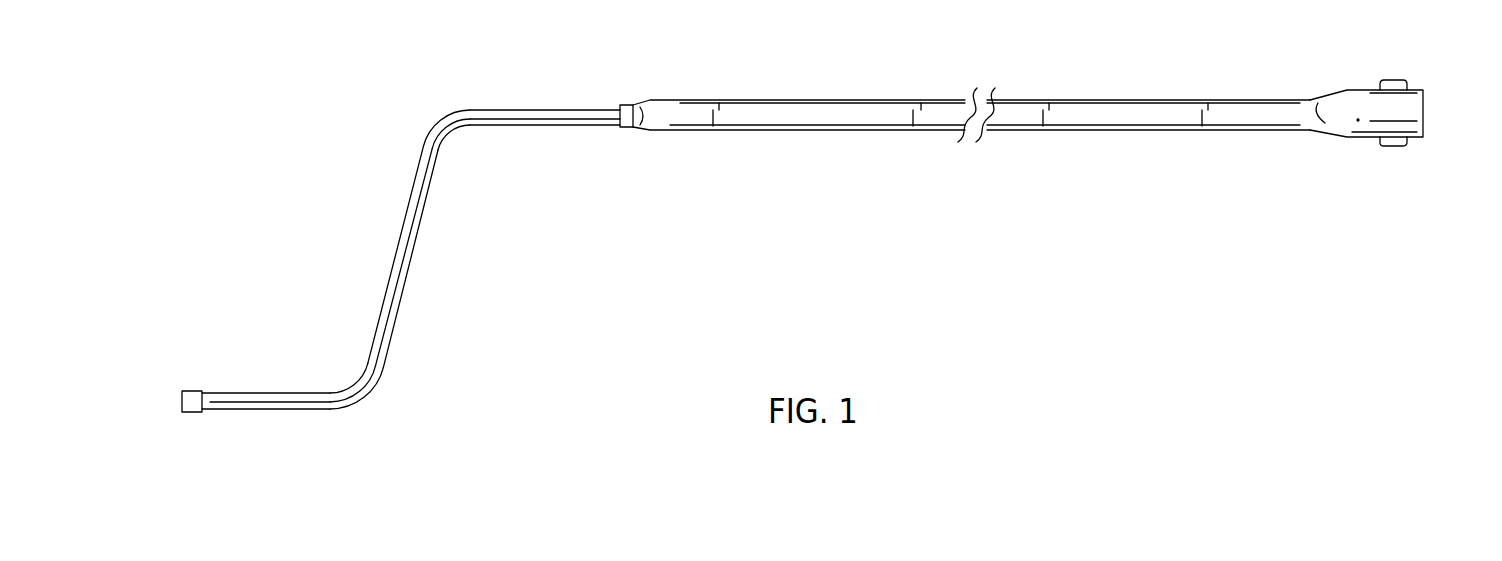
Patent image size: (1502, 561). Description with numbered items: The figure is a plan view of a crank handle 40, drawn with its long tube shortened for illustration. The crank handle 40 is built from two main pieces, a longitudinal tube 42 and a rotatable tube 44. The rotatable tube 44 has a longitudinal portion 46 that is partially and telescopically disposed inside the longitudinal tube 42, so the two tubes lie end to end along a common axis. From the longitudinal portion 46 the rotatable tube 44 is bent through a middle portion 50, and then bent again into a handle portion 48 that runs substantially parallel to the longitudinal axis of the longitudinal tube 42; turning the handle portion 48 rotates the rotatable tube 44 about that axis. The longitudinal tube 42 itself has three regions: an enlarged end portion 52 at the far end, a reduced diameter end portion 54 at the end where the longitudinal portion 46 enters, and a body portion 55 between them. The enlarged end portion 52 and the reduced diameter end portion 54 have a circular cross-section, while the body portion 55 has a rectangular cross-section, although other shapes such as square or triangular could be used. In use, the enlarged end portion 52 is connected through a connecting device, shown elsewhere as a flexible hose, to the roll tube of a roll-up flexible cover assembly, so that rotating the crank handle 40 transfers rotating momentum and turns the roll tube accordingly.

The crank handle 40 is at (1070, 145).
The longitudinal tube 42 is at (792, 100).
The rotatable tube 44 is at (482, 109).
The longitudinal portion 46 is at (558, 112).
The handle portion 48 is at (253, 392).
The middle portion 50 is at (398, 268).
The enlarged end portion 52 is at (1365, 100).
The reduced diameter end portion 54 is at (622, 128).
The body portion 55 is at (1085, 107).